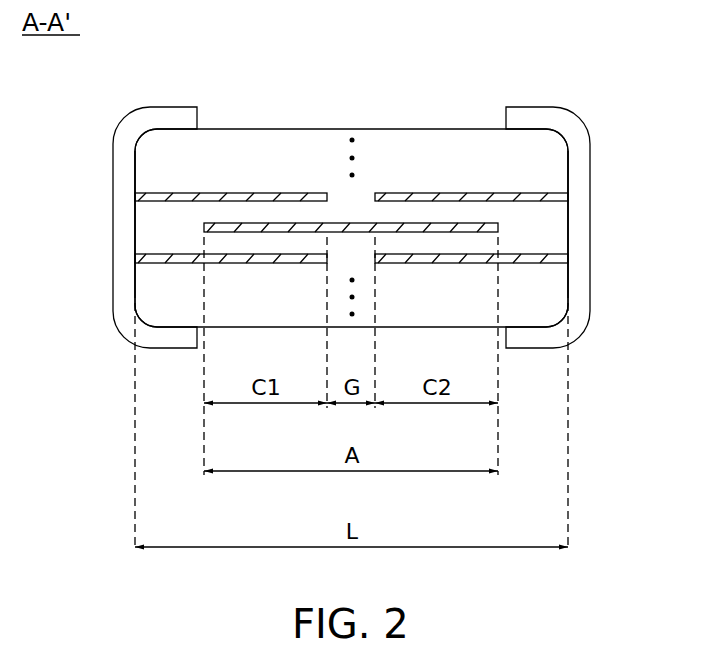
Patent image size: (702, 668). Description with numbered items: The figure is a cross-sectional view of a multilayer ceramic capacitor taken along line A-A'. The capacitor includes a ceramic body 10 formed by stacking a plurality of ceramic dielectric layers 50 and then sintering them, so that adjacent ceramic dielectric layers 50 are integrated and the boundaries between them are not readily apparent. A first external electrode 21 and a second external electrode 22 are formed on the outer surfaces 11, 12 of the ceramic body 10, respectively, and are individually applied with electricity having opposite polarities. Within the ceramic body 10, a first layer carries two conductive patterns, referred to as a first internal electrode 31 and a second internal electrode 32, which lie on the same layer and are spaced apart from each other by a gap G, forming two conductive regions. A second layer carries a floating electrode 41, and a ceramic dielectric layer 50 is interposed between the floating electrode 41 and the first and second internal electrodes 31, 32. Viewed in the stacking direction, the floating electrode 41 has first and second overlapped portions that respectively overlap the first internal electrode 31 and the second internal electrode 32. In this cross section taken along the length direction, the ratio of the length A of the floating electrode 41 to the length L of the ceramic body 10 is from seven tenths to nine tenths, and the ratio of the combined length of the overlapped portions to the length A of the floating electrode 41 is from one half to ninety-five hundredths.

The ceramic body 10 is at (250, 146).
The outer surface of the ceramic body 11 is at (137, 289).
The outer surface of the ceramic body 12 is at (568, 291).
The first external electrode 21 is at (161, 115).
The second external electrode 22 is at (535, 115).
The first internal electrode 31 is at (160, 254).
The second internal electrode 32 is at (543, 254).
The floating electrode 41 is at (338, 223).
The ceramic dielectric layer 50 is at (440, 245).